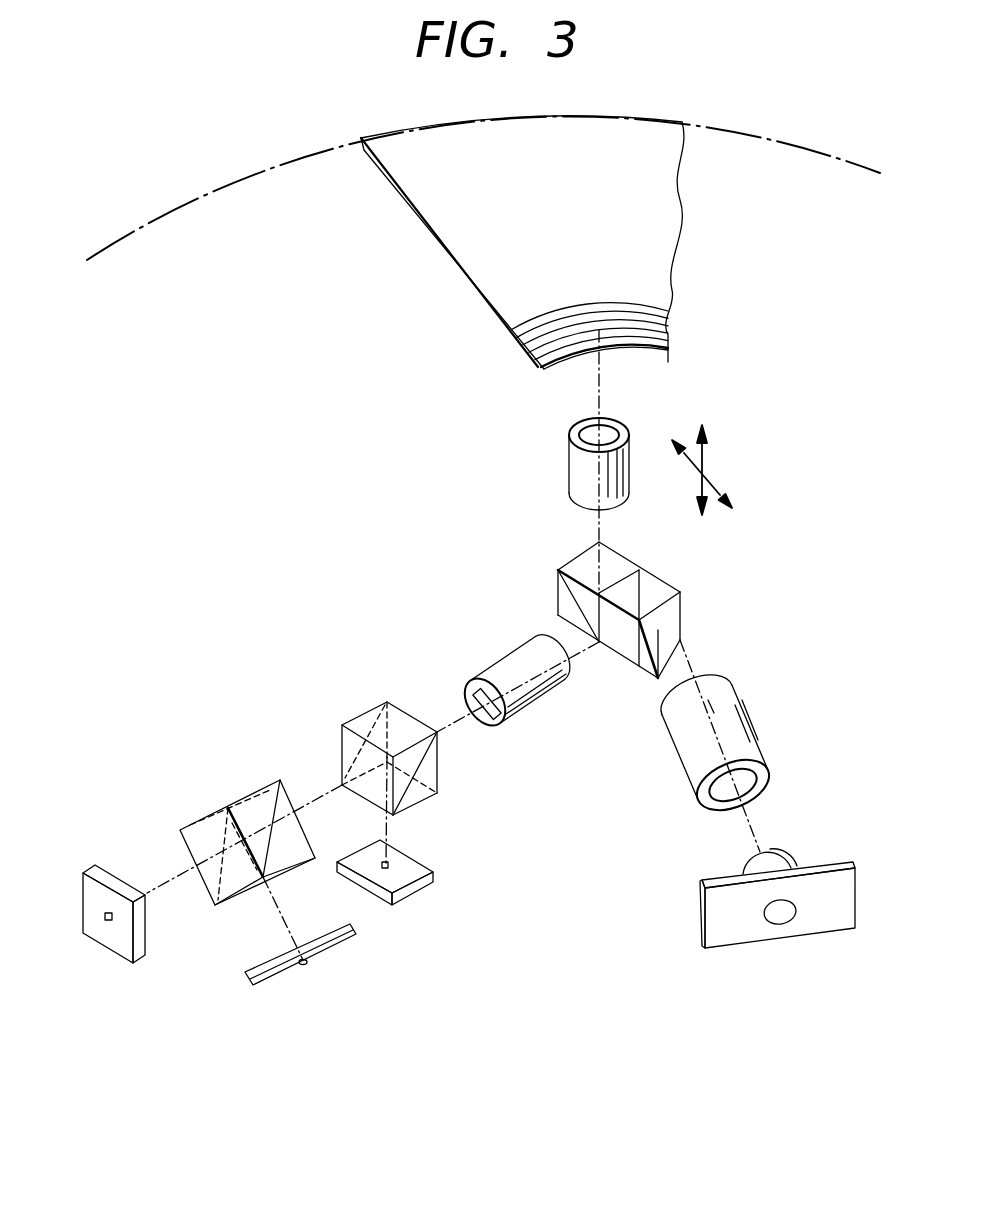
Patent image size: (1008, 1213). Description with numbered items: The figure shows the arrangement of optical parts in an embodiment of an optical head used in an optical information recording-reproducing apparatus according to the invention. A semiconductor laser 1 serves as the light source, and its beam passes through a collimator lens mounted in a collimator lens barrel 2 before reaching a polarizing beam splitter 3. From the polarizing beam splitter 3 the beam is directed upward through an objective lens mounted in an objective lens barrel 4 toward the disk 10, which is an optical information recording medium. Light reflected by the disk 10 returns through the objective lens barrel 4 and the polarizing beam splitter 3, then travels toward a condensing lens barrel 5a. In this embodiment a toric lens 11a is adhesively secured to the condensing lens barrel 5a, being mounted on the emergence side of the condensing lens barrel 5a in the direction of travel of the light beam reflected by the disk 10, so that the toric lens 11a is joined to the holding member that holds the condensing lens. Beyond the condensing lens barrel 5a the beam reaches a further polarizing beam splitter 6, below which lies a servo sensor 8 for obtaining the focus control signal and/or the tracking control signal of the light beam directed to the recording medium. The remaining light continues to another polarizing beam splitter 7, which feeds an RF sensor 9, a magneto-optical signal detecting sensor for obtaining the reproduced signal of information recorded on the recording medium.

The semiconductor laser 1 is at (703, 936).
The collimator lens barrel 2 is at (745, 713).
The polarizing beam splitter 3 is at (655, 592).
The objective lens barrel 4 is at (630, 452).
The condensing lens barrel 5a is at (528, 718).
The polarizing beam splitter 6 is at (365, 720).
The polarizing beam splitter 7 is at (237, 793).
The servo sensor 8 is at (433, 890).
The RF sensor 9 is at (145, 952).
The disk 10 is at (650, 290).
The toric lens 11a is at (494, 728).